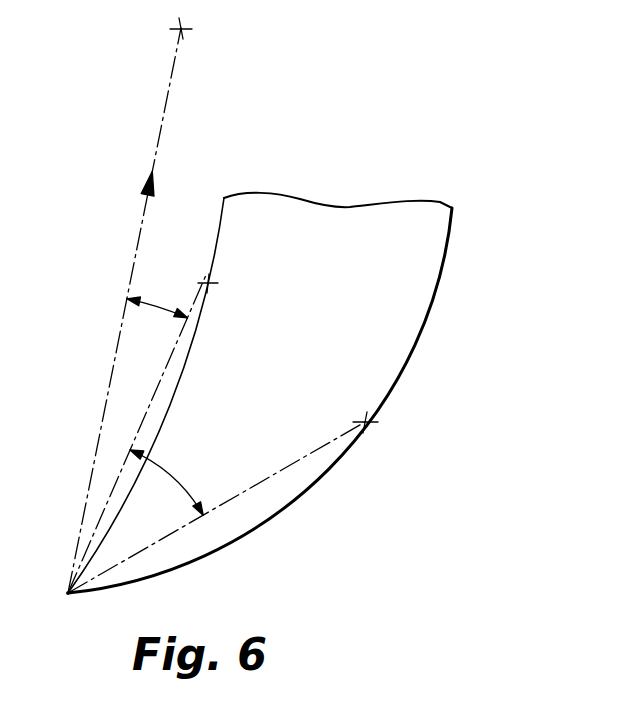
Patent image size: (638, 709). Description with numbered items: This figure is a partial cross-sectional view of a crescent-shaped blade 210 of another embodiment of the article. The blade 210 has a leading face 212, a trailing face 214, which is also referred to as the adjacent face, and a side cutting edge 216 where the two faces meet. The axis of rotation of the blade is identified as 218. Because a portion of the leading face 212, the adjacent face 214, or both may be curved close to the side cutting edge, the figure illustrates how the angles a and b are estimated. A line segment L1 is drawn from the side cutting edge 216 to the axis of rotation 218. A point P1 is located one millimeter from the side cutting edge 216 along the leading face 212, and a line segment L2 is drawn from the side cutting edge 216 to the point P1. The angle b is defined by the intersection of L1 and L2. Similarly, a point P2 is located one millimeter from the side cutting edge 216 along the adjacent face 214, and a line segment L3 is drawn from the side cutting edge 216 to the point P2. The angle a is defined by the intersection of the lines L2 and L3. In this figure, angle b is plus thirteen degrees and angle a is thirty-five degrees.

The crescent-shaped blade 210 is at (321, 369).
The leading face 212 is at (221, 220).
The trailing face 214 is at (316, 486).
The cutting edge 216 is at (68, 594).
The axis of rotation 218 is at (183, 26).
The line segment L1 is at (101, 427).
The line segment L2 is at (171, 366).
The line segment L3 is at (256, 485).
The point P1 is at (212, 281).
The point P2 is at (369, 425).
The angle a is at (176, 476).
The angle b is at (158, 293).